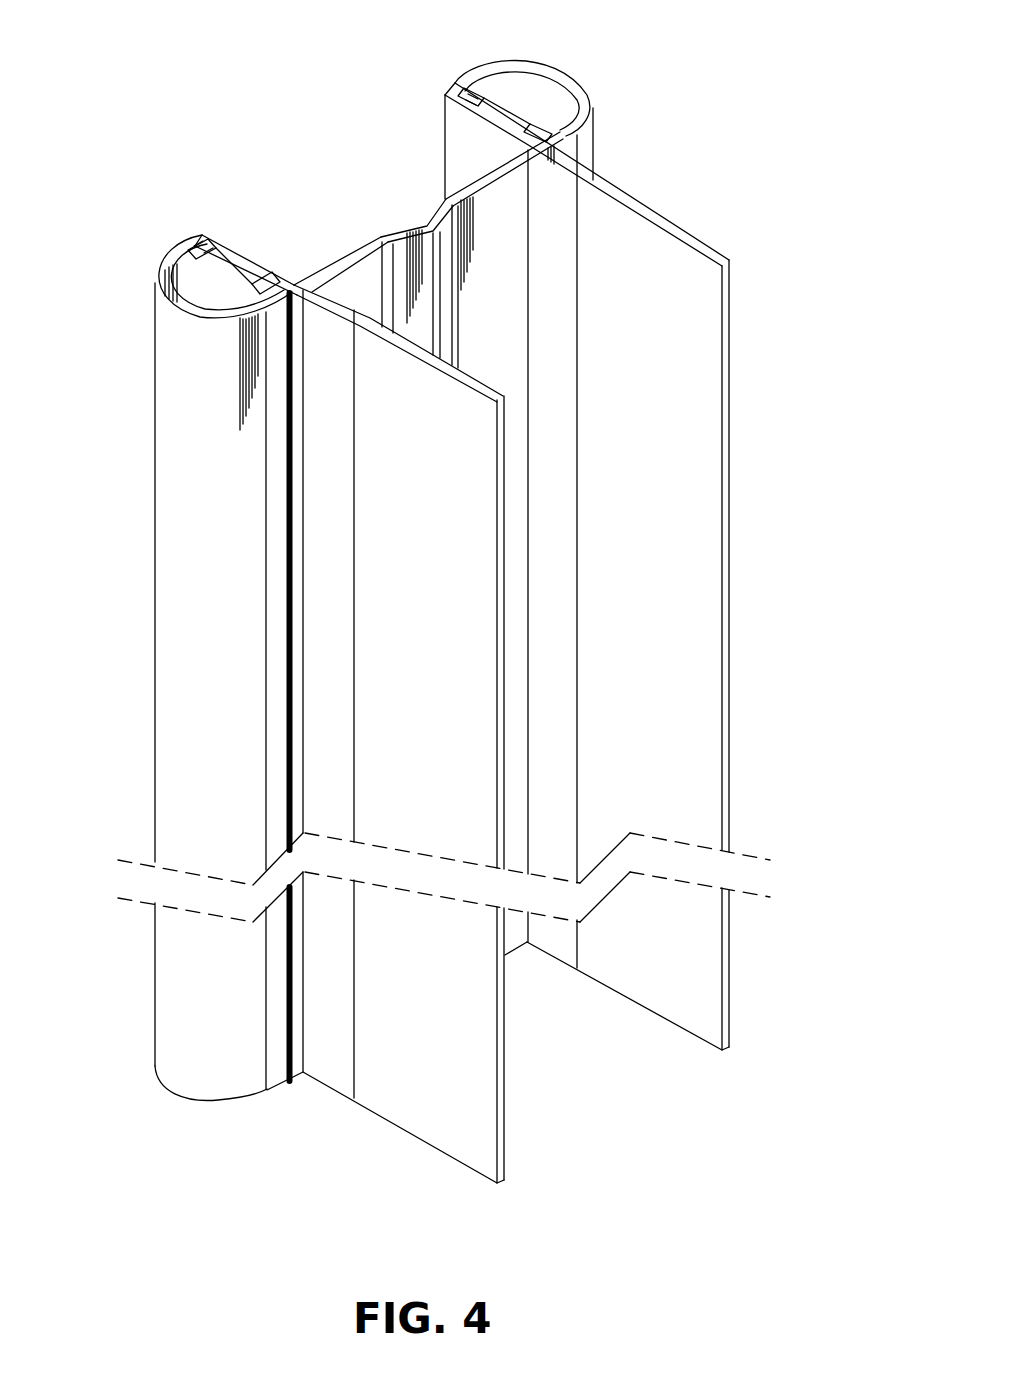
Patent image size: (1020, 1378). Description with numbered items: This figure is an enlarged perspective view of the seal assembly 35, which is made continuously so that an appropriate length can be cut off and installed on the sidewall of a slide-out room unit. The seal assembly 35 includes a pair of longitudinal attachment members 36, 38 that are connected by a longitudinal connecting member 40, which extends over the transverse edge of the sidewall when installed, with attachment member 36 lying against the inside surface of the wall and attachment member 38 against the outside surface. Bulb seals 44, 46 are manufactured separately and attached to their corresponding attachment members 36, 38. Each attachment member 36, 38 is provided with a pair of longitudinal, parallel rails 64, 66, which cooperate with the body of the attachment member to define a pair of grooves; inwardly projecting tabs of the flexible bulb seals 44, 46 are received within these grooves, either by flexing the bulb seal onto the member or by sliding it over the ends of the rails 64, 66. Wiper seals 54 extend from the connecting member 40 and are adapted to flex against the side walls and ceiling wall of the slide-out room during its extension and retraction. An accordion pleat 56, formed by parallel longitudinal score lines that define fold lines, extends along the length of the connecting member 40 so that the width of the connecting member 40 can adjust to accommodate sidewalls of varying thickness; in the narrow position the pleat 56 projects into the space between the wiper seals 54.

The seal assembly 35 is at (478, 591).
The attachment member 36 is at (251, 263).
The attachment member 38 is at (509, 115).
The connecting member 40 is at (334, 264).
The bulb seal 44 is at (170, 590).
The bulb seal 46 is at (584, 153).
The wiper seal 54 is at (698, 967).
The accordion pleat 56 is at (414, 229).
The rail 64 is at (256, 291).
The rail 66 is at (200, 252).